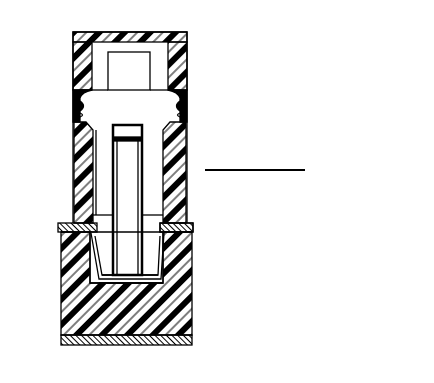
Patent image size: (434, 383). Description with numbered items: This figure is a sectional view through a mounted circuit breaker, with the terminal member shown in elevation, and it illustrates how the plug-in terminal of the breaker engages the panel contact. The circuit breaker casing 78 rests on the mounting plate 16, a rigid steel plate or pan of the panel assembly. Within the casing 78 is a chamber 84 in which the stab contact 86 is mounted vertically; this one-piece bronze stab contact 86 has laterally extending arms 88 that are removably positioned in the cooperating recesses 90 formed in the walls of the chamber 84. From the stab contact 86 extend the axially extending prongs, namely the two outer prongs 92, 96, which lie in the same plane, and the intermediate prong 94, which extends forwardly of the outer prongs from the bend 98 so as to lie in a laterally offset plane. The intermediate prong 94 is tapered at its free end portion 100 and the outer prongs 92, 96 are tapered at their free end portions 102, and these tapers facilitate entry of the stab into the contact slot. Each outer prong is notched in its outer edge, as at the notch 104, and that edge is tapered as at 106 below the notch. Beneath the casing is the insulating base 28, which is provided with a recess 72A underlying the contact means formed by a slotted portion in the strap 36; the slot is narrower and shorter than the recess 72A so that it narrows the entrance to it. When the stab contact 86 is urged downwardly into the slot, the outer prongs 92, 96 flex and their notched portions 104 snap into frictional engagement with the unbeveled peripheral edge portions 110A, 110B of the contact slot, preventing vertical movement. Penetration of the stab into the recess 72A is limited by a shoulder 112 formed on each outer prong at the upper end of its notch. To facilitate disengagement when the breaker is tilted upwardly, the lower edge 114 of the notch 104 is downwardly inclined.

The mounting plate 16 is at (86, 341).
The insulating base 28 is at (76, 321).
The strap 36 is at (197, 228).
The recess 72A is at (188, 277).
The circuit breaker casing 78 is at (188, 45).
The chamber 84 is at (143, 44).
The stab contact 86 is at (135, 80).
The laterally extending arms 88 is at (186, 106).
The recesses 90 is at (184, 119).
The outer prong 92 is at (102, 172).
The intermediate prong 94 is at (125, 255).
The outer prong 96 is at (188, 193).
The bend 98 is at (128, 139).
The tapered free end portion 100 is at (186, 303).
The tapered free end portions 102 is at (180, 292).
The notch 104 is at (192, 244).
The tapered edge 106 is at (190, 259).
The unbeveled peripheral edge portion 110A is at (190, 217).
The unbeveled peripheral edge portion 110B is at (56, 229).
The shoulder 112 is at (96, 212).
The lower edge of notch 114 is at (103, 244).